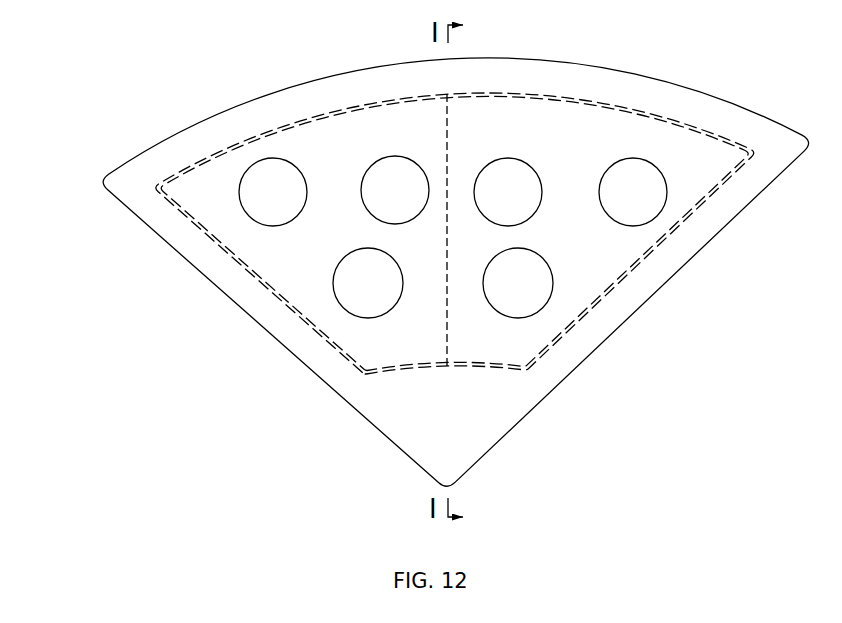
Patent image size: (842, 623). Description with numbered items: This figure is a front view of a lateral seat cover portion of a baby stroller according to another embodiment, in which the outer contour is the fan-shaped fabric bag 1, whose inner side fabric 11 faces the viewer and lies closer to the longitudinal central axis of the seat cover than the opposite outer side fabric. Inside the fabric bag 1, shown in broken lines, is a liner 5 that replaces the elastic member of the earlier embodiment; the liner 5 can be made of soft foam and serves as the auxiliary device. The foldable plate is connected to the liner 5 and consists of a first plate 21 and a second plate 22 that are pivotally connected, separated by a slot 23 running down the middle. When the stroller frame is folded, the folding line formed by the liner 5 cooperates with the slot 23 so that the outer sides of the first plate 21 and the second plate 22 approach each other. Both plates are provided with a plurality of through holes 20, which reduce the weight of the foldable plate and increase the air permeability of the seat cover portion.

The fabric bag 1 is at (421, 272).
The inner side fabric 11 is at (137, 195).
The liner 5 is at (185, 218).
The through holes 20 is at (527, 288).
The first plate 21 is at (250, 245).
The second plate 22 is at (600, 258).
The slot 23 is at (445, 233).